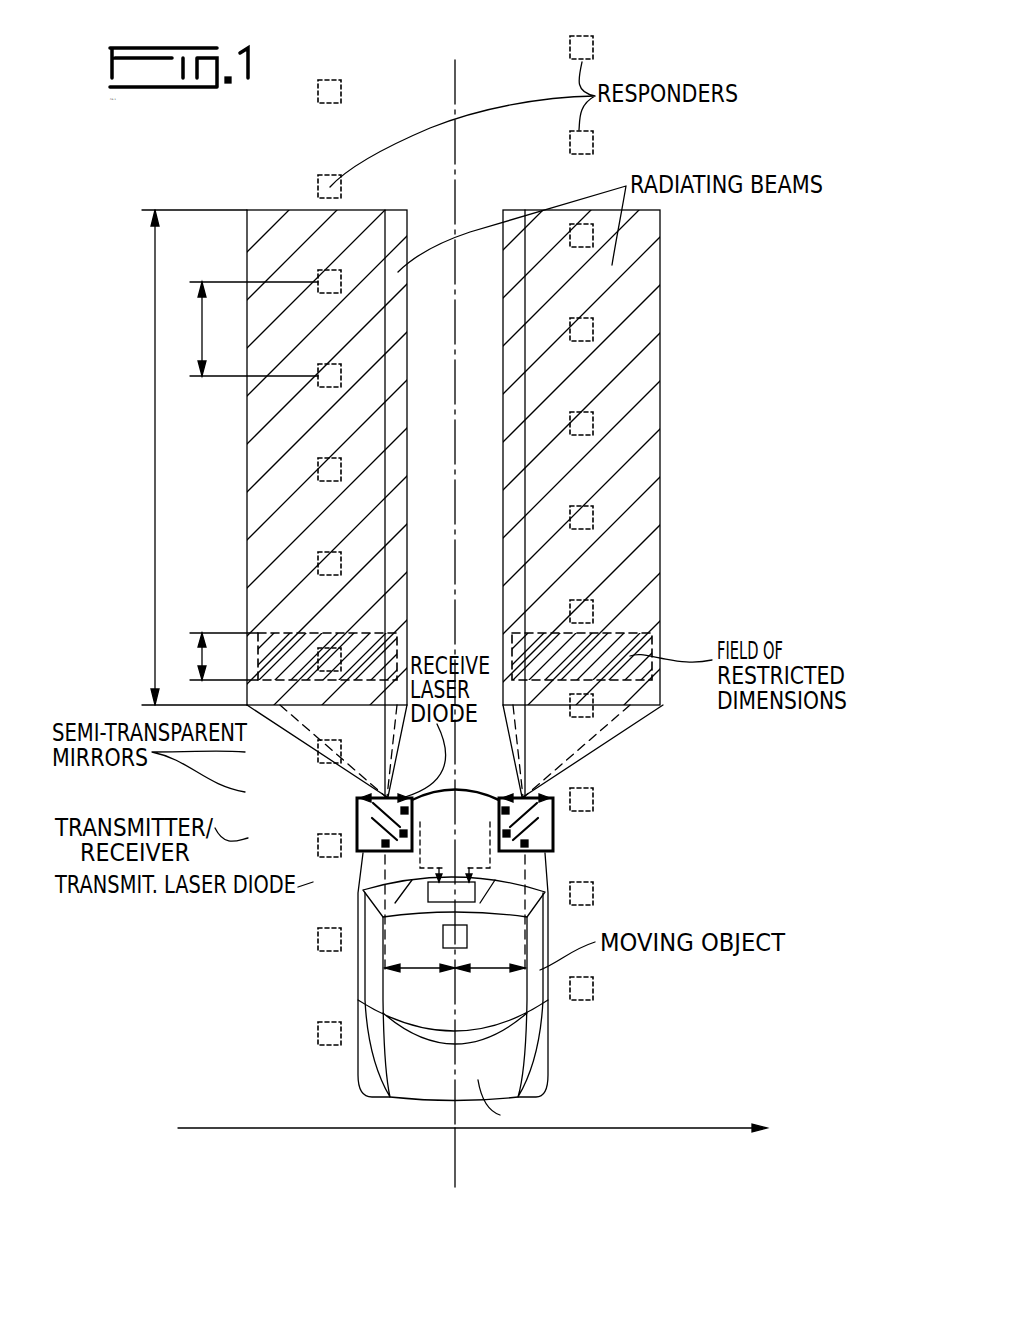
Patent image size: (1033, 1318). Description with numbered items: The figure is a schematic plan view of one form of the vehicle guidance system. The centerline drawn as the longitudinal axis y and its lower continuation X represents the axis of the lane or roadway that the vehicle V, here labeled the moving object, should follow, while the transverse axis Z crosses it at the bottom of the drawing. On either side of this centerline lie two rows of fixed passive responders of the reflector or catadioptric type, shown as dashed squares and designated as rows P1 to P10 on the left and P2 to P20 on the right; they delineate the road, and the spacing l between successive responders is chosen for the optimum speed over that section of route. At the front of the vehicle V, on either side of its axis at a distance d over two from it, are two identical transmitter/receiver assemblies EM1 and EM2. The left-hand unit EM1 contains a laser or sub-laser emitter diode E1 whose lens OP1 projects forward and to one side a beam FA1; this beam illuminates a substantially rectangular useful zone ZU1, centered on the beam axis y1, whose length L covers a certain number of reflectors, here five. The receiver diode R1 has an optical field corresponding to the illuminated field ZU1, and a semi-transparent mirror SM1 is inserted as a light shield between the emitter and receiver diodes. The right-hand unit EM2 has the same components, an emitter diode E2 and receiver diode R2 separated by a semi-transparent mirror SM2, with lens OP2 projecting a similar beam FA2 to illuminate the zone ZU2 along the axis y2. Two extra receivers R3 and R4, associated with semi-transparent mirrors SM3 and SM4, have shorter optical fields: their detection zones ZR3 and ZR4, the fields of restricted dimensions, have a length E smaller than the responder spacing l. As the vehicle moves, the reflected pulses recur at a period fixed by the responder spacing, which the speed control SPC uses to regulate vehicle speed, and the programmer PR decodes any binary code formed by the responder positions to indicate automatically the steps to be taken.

The responder P10 is at (336, 79).
The responder P20 is at (589, 35).
The responder P1 is at (331, 1061).
The responder P2 is at (584, 1011).
The beam axis y1 is at (386, 486).
The beam axis y2 is at (526, 486).
The illuminated field ZU1 is at (580, 461).
The illuminated field ZU2 is at (768, 457).
The beam FA1 is at (247, 556).
The beam FA2 is at (660, 556).
The zone of detection ZR3 is at (277, 633).
The zone of detection ZR4 is at (632, 633).
The length of useful zone L is at (185, 457).
The spacing between responders l is at (242, 329).
The length of restricted field E is at (213, 656).
The lens OP1 is at (390, 797).
The lens OP2 is at (522, 797).
The semi-transparent mirror SM1 is at (357, 820).
The semi-transparent mirror SM2 is at (553, 820).
The semi-transparent mirror SM3 is at (358, 802).
The semi-transparent mirror SM4 is at (552, 802).
The transmitter/receiver assembly EM1 is at (357, 833).
The transmitter/receiver assembly EM2 is at (553, 833).
The emitter diode E1 is at (357, 848).
The emitter diode E2 is at (553, 848).
The receiver diode R1 is at (422, 849).
The receiver diode R2 is at (484, 849).
The extra receiver R3 is at (422, 819).
The extra receiver R4 is at (483, 819).
The speed control SPC is at (432, 896).
The programmer PR is at (452, 943).
The vehicle V is at (453, 992).
The distance between assemblies d is at (428, 948).
The lane axis X is at (466, 1160).
The transverse axis Z is at (472, 1143).
The lane axis y is at (464, 585).